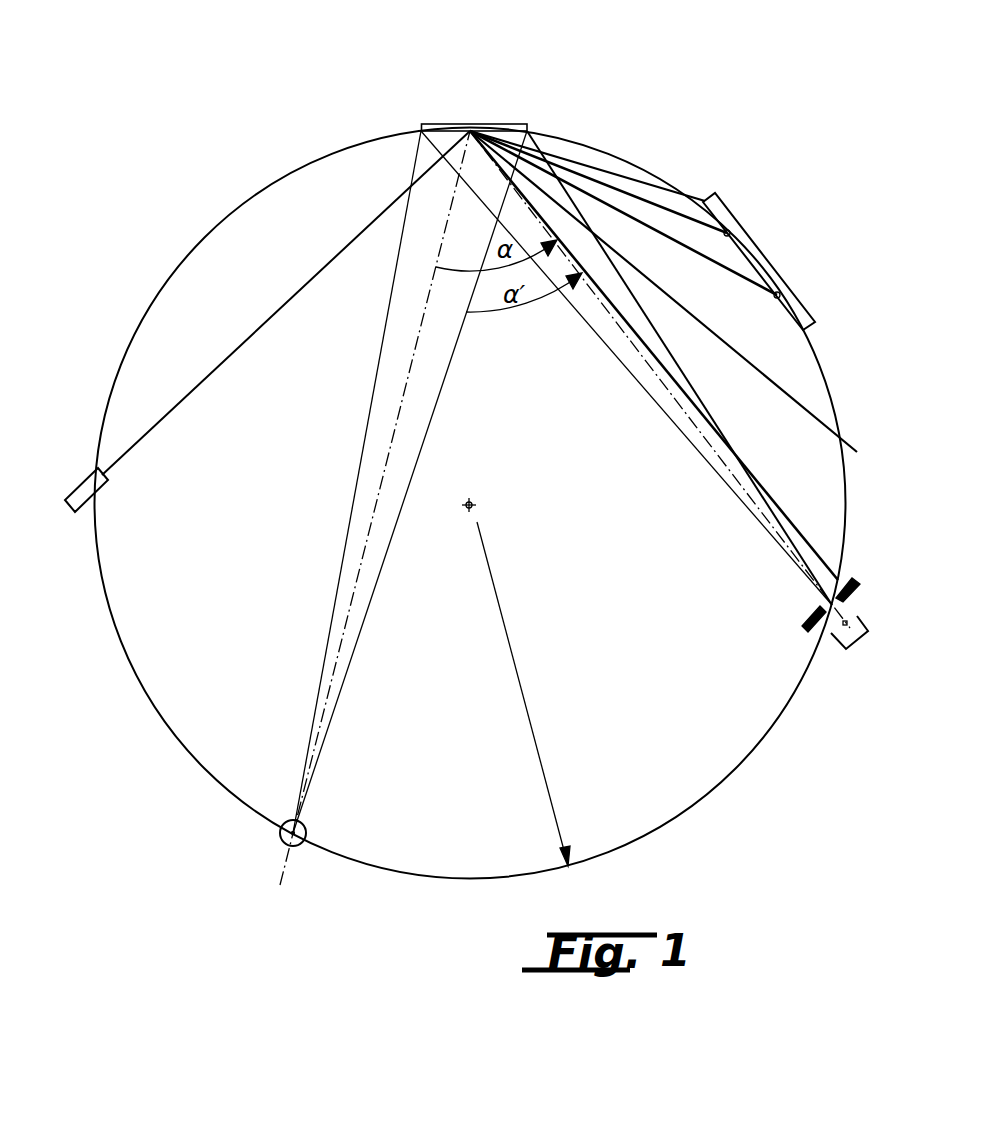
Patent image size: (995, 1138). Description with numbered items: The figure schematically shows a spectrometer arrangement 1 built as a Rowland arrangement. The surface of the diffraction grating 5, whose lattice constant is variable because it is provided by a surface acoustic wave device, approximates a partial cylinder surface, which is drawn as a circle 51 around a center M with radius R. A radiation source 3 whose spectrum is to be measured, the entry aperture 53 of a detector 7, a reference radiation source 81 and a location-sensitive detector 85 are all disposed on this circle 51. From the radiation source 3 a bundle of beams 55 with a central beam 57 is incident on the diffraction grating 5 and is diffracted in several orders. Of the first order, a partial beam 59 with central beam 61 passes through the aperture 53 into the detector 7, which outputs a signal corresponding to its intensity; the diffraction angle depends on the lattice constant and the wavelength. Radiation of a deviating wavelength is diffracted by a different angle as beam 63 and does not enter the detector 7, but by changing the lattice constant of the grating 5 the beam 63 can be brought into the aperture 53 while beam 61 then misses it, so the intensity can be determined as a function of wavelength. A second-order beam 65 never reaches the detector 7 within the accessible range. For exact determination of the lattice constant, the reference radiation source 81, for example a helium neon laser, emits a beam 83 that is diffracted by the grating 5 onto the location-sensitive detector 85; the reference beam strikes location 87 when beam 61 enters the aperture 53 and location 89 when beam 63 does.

The spectrometer arrangement 1 is at (628, 100).
The radiation source 3 is at (281, 843).
The diffraction grating 5 is at (440, 123).
The detector 7 is at (850, 652).
The circle 51 is at (175, 737).
The entry aperture 53 is at (825, 611).
The bundle of beams 55 is at (366, 624).
The central beam 57 is at (379, 491).
The partial beam 59 is at (578, 315).
The central beam 61 is at (648, 367).
The diffracted beam 63 is at (800, 530).
The beam of the second diffraction order 65 is at (770, 386).
The reference radiation source 81 is at (86, 483).
The beam 83 is at (222, 367).
The location-sensitive detector 85 is at (718, 209).
The location 87 is at (736, 235).
The location 89 is at (786, 297).
The center M is at (475, 512).
The radius R is at (523, 694).